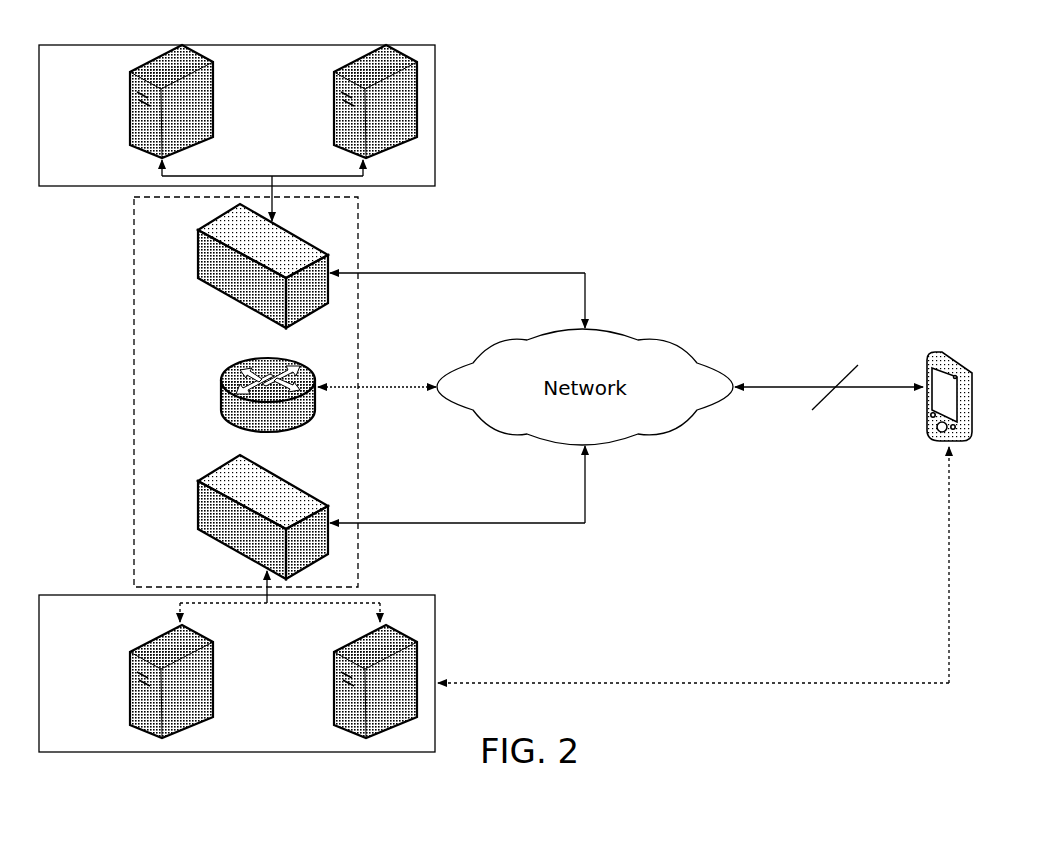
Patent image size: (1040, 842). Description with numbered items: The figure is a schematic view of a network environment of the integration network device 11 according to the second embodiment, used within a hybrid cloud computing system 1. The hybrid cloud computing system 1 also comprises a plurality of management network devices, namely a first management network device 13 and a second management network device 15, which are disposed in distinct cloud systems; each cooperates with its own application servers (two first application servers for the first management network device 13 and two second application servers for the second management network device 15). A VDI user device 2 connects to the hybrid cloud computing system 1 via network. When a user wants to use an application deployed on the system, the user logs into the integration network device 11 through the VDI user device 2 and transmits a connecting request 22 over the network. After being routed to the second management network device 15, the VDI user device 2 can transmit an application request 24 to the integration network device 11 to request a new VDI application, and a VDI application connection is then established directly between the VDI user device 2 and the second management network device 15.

The hybrid cloud computing system 1 is at (134, 252).
The integration network device 11 is at (222, 398).
The first management network device 13 is at (198, 278).
The second management network device 15 is at (198, 529).
The VDI user device 2 is at (972, 418).
The connecting request 22 is at (829, 364).
The application request 24 is at (835, 387).